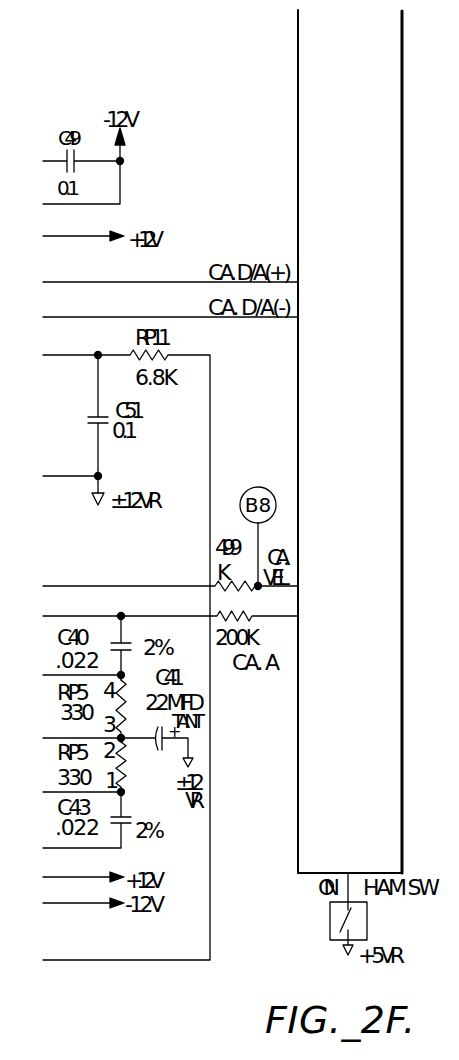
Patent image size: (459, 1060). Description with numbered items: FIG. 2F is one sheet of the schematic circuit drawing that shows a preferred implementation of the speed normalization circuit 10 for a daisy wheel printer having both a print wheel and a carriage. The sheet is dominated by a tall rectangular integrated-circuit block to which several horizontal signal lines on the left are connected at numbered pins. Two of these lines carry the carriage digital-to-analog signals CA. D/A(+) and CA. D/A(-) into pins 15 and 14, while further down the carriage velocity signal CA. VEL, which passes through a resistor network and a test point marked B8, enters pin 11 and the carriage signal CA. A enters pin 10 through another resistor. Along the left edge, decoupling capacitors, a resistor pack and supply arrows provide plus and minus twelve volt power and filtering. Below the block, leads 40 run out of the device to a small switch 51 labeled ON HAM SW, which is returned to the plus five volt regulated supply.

The leads 40 is at (350, 443).
The switch 51 is at (360, 914).
The CA. D/A(+) input pin 15 is at (181, 283).
The CA. D/A(-) input pin 14 is at (181, 318).
The CA. VEL input pin 11 is at (180, 591).
The speed normalization circuit 10 is at (183, 621).